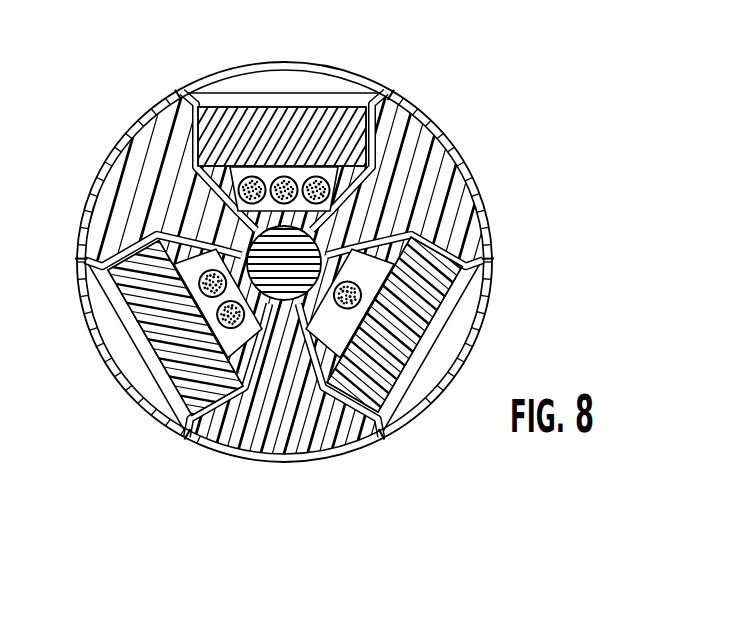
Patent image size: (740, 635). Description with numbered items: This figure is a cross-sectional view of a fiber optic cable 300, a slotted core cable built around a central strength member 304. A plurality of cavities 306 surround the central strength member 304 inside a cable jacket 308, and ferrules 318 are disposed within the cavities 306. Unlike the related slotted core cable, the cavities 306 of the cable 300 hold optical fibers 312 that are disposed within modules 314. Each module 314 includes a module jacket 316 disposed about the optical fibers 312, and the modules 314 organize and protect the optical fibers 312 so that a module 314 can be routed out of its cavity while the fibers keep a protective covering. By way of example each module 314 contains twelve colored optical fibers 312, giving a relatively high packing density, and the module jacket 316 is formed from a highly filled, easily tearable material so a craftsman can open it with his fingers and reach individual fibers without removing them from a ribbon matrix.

The cable 300 is at (560, 98).
The central strength member 304 is at (302, 243).
The cavities 306 is at (262, 92).
The cable jacket 308 is at (392, 92).
The optical fibers 312 is at (326, 347).
The modules 314 is at (239, 190).
The module jacket 316 is at (413, 237).
The ferrules 318 is at (339, 116).